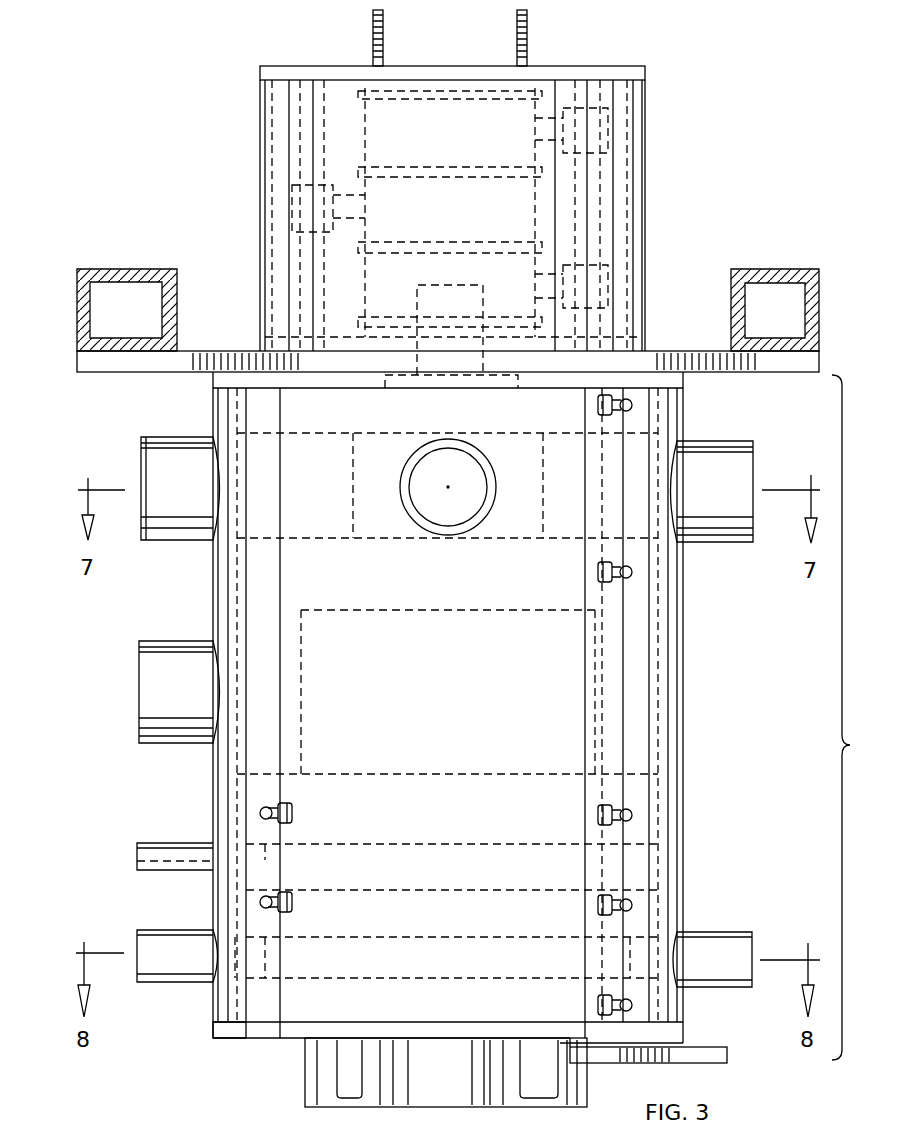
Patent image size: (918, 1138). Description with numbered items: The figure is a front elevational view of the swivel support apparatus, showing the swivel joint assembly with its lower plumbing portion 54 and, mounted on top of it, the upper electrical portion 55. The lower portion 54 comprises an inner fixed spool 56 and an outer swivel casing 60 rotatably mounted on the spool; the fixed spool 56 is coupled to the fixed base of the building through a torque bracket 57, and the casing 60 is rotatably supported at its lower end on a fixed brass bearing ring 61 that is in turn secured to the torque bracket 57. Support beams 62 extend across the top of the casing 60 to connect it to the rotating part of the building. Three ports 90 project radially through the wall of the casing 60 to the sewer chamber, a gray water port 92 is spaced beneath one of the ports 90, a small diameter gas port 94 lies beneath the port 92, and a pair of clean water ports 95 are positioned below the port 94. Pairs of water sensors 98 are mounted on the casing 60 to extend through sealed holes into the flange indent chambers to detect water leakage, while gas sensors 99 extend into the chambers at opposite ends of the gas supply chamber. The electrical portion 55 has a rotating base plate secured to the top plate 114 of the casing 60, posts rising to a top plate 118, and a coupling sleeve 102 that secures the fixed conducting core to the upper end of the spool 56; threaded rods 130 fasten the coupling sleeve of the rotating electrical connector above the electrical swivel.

The threaded rods 130 is at (515, 23).
The upper portion 55 is at (665, 117).
The support beams 62 is at (138, 269).
The top plate 118 is at (705, 351).
The top plate 114 is at (672, 383).
The coupling sleeve 102 is at (450, 238).
The ports 90 is at (182, 456).
The water sensors 98 is at (598, 406).
The outer swivel casing 60 is at (651, 662).
The gray water port 92 is at (155, 711).
The lower portion 54 is at (856, 717).
The gas port 94 is at (180, 856).
The gas sensors 99 is at (296, 895).
The clean water ports 95 is at (181, 985).
The torque bracket 57 is at (705, 1056).
The bearing ring 61 is at (222, 1038).
The fixed spool 56 is at (305, 1062).